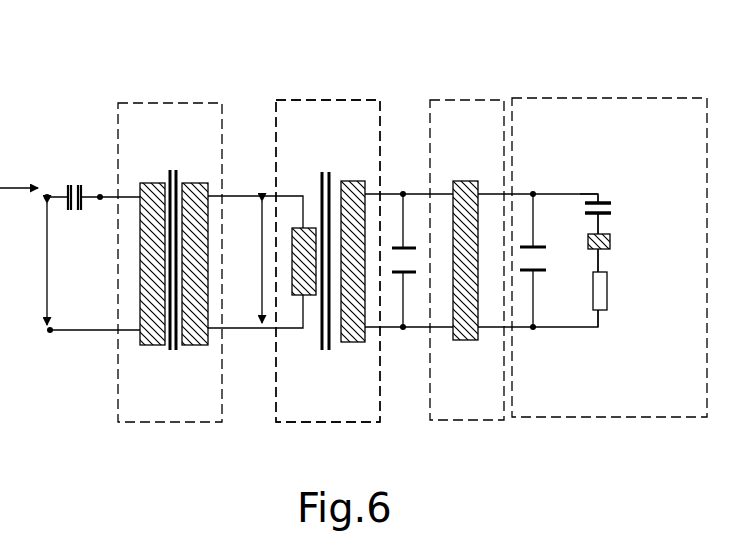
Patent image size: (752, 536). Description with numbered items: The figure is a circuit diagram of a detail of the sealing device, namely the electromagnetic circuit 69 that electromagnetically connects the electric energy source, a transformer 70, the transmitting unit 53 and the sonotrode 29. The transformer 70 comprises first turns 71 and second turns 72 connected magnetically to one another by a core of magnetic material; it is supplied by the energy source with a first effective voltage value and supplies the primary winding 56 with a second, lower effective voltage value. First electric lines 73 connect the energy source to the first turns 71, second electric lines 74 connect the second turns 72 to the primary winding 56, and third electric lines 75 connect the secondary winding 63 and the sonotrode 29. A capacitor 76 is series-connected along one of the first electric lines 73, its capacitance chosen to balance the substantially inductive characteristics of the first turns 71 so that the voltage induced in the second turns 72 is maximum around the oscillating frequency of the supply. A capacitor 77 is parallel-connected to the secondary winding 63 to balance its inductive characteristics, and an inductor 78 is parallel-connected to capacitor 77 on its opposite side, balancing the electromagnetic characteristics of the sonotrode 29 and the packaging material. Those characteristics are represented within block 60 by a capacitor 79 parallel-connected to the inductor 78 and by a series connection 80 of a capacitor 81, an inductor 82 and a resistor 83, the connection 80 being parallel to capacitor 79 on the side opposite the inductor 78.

The sonotrode 29 is at (600, 95).
The transmitting unit 53 is at (262, 106).
The primary winding 56 is at (297, 222).
The transformer unit 60 is at (375, 95).
The secondary winding 63 is at (352, 178).
The electromagnetic circuit 69 is at (151, 80).
The transformer 70 is at (172, 253).
The first turns 71 is at (153, 345).
The second turns 72 is at (192, 345).
The first electric lines 73 is at (90, 340).
The second electric lines 74 is at (243, 345).
The third electric lines 75 is at (626, 297).
The capacitor 76 is at (65, 182).
The capacitor 77 is at (410, 235).
The inductor 78 is at (462, 178).
The capacitor 79 is at (535, 340).
The series connection 80 is at (615, 190).
The capacitor 81 is at (615, 208).
The inductor 82 is at (615, 242).
The resistor 83 is at (612, 292).